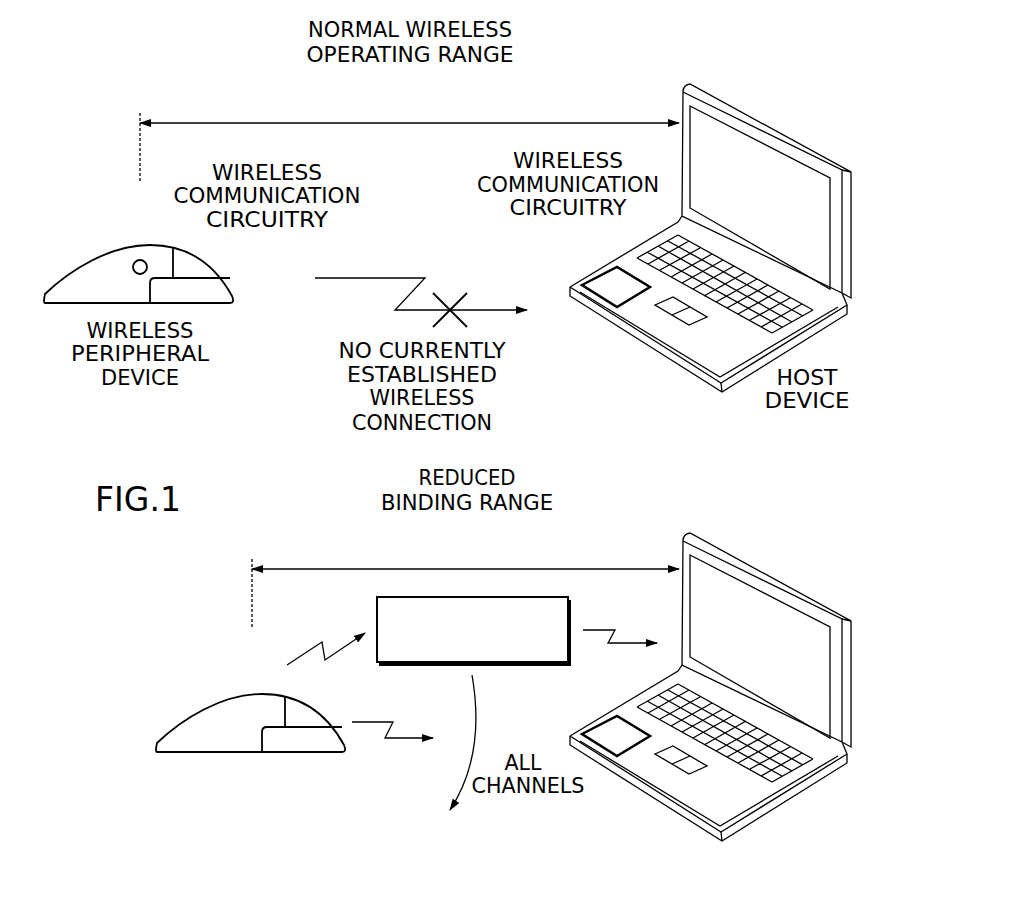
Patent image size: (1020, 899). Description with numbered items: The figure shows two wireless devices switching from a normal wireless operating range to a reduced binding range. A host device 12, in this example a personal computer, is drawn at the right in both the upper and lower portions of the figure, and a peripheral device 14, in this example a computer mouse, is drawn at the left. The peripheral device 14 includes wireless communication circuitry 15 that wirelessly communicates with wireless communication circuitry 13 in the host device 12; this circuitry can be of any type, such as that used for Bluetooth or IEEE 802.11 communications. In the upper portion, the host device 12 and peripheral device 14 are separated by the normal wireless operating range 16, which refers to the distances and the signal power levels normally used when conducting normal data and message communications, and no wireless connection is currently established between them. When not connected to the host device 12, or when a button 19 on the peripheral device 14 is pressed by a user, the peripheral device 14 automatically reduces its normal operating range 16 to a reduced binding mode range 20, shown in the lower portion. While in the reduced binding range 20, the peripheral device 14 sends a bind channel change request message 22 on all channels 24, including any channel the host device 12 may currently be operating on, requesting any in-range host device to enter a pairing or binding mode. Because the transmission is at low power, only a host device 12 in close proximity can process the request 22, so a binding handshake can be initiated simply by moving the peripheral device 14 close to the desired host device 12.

The host device 12 is at (703, 457).
The wireless communication circuitry 13 is at (585, 273).
The peripheral device 14 is at (194, 506).
The wireless communication circuitry 15 is at (230, 290).
The normal wireless operating range 16 is at (412, 121).
The button 19 is at (140, 258).
The reduced binding mode range 20 is at (468, 567).
The bind channel change request message 22 is at (377, 615).
The all channels 24 is at (478, 708).